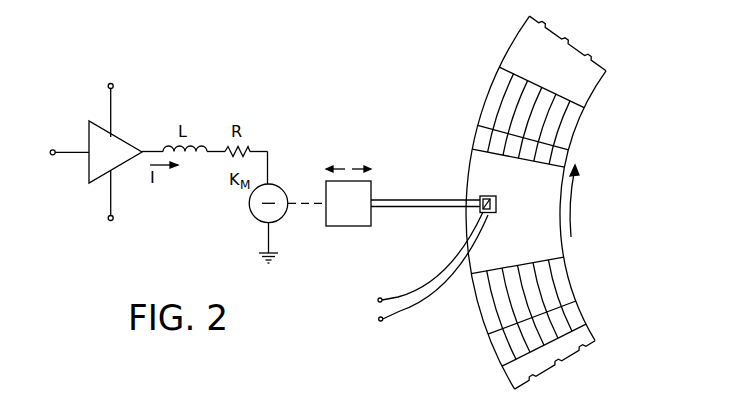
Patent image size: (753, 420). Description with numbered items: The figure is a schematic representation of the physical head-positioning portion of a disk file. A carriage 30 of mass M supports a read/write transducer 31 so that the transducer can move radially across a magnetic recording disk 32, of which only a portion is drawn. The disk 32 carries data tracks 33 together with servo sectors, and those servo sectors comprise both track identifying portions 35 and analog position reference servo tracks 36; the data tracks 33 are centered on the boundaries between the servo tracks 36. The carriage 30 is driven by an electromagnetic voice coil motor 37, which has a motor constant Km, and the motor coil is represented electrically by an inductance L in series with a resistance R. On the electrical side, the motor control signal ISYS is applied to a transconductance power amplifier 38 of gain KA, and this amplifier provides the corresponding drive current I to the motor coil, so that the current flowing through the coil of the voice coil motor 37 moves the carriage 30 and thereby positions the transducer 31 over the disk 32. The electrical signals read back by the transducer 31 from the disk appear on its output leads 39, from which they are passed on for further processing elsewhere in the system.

The carriage 30 is at (355, 226).
The read/write transducer 31 is at (486, 196).
The magnetic recording disk 32 is at (477, 331).
The data tracks 33 is at (572, 210).
The track identifying portions 35 is at (568, 157).
The analog position reference servo tracks 36 is at (584, 117).
The electromagnetic voice coil motor 37 is at (253, 218).
The transconductance power amplifier 38 is at (122, 135).
The output leads 39 is at (399, 295).